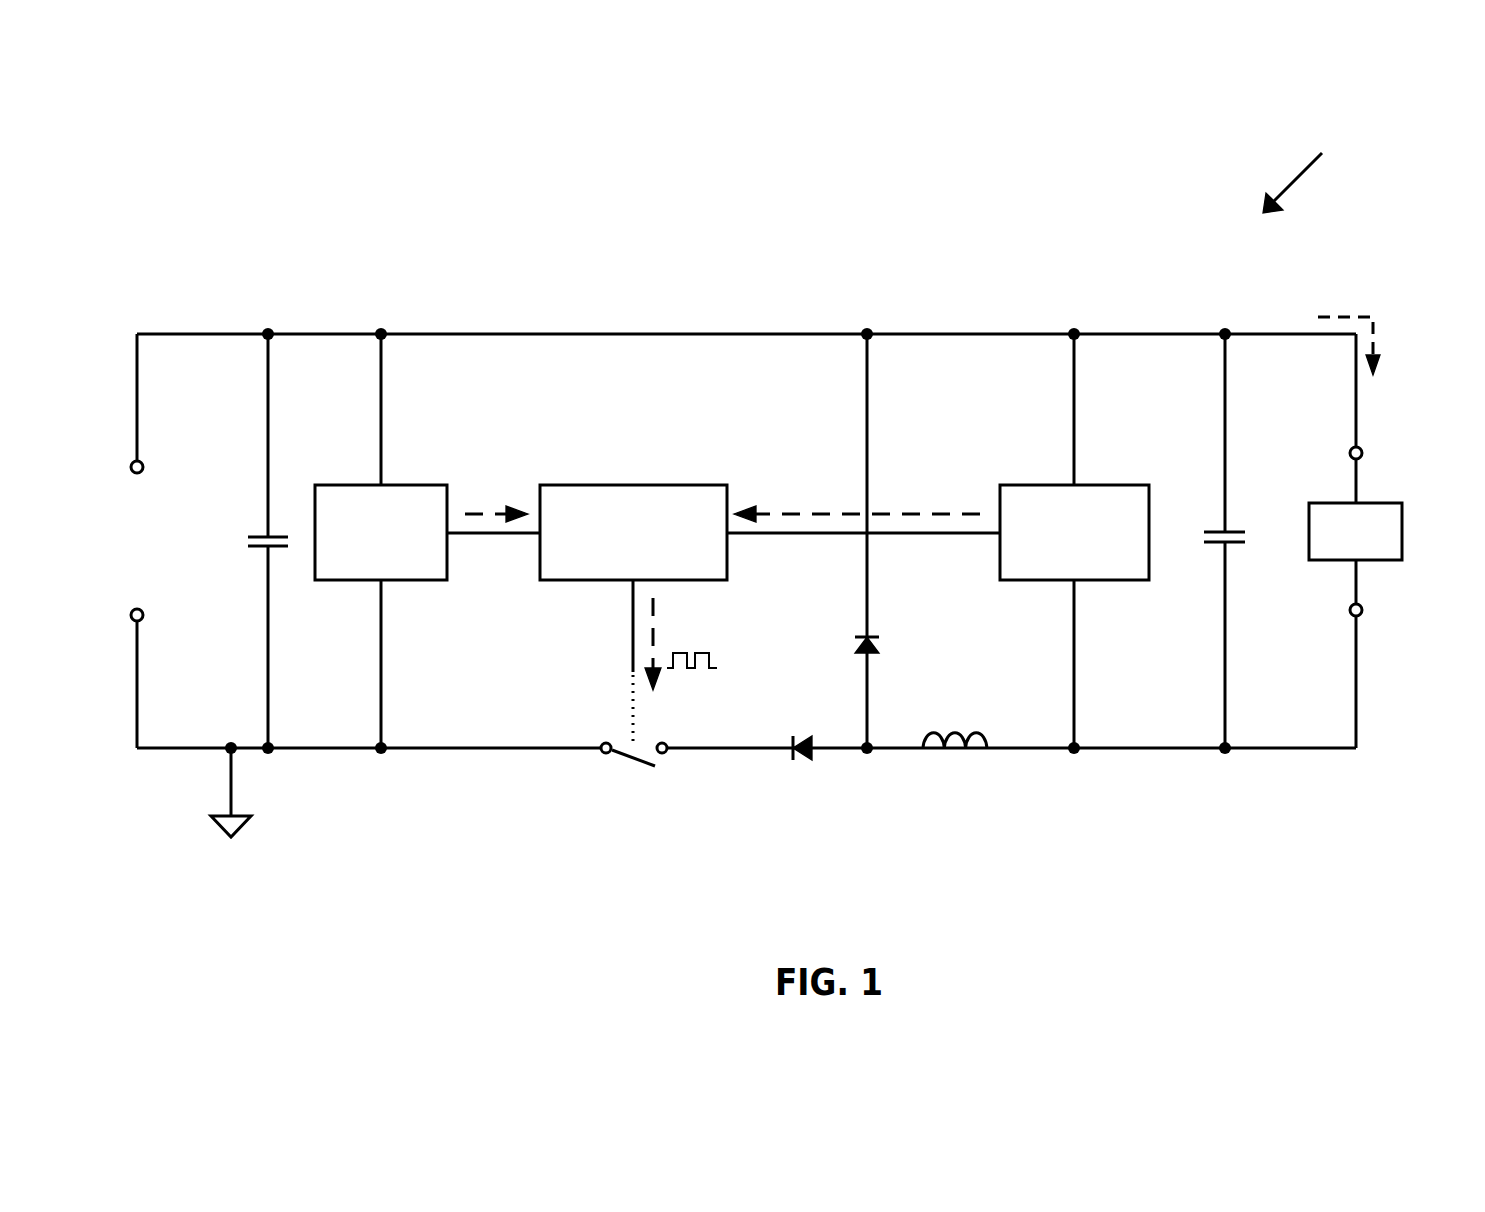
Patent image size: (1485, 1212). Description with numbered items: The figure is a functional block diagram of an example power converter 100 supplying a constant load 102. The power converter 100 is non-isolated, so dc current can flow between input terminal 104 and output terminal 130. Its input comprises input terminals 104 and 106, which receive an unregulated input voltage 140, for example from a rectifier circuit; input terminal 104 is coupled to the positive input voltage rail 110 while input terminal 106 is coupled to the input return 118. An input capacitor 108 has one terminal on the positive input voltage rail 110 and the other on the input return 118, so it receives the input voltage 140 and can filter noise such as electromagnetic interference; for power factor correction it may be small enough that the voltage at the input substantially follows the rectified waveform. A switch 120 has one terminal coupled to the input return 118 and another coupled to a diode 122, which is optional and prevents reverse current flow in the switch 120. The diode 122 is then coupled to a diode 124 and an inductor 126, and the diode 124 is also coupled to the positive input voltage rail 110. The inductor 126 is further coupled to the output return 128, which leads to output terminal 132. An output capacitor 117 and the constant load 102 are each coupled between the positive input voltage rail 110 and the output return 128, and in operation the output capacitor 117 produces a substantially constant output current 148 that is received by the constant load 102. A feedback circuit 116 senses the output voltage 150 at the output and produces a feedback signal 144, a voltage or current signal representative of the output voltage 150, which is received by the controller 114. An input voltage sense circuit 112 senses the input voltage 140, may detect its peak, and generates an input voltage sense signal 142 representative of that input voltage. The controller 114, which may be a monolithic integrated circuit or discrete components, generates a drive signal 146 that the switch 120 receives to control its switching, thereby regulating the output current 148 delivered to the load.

The power converter 100 is at (1313, 168).
The constant load 102 is at (1318, 562).
The input terminal 104 is at (148, 462).
The input terminal 106 is at (150, 620).
The input capacitor 108 is at (247, 534).
The positive input voltage rail 110 is at (330, 330).
The input voltage sense circuit 112 is at (402, 478).
The controller 114 is at (680, 478).
The feedback circuit 116 is at (1130, 476).
The output capacitor 117 is at (1237, 520).
The input return 118 is at (240, 785).
The switch 120 is at (624, 767).
The diode 122 is at (800, 735).
The diode 124 is at (885, 645).
The inductor 126 is at (968, 712).
The output return 128 is at (1140, 755).
The output terminal 130 is at (1348, 447).
The output terminal 132 is at (1350, 618).
The input voltage VIN 140 is at (170, 553).
The input voltage sense signal 142 is at (490, 505).
The feedback signal 144 is at (828, 502).
The drive signal 146 is at (660, 622).
The output current IO 148 is at (1355, 282).
The output voltage VO 150 is at (1430, 560).